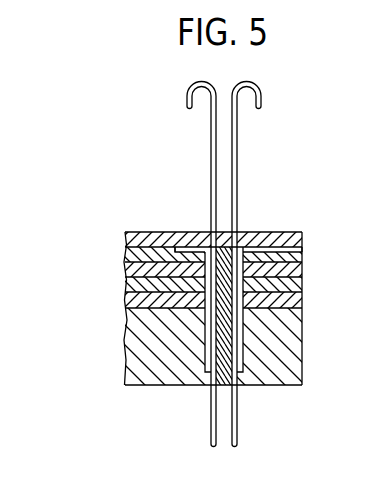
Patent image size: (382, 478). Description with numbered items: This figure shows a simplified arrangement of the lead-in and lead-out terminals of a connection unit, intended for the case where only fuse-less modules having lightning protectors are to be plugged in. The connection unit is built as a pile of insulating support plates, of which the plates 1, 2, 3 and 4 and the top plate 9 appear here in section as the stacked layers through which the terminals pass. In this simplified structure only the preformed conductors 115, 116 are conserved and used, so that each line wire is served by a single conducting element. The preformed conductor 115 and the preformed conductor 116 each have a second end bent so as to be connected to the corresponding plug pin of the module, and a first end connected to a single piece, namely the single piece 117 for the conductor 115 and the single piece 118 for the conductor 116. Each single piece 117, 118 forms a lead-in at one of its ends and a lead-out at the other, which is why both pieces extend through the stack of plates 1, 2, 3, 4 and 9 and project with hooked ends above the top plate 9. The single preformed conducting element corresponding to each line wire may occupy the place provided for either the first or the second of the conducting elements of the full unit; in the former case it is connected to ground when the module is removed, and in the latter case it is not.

The insulating support plate 1 is at (127, 300).
The insulating support plate 2 is at (127, 287).
The insulating support plate 3 is at (127, 268).
The insulating support plate 4 is at (127, 257).
The insulating support plate 9 is at (127, 237).
The preformed conductor 115 is at (253, 235).
The preformed conductor 116 is at (193, 243).
The single piece forming lead-in and lead-out 117 is at (237, 148).
The single piece forming lead-in and lead-out 118 is at (211, 122).